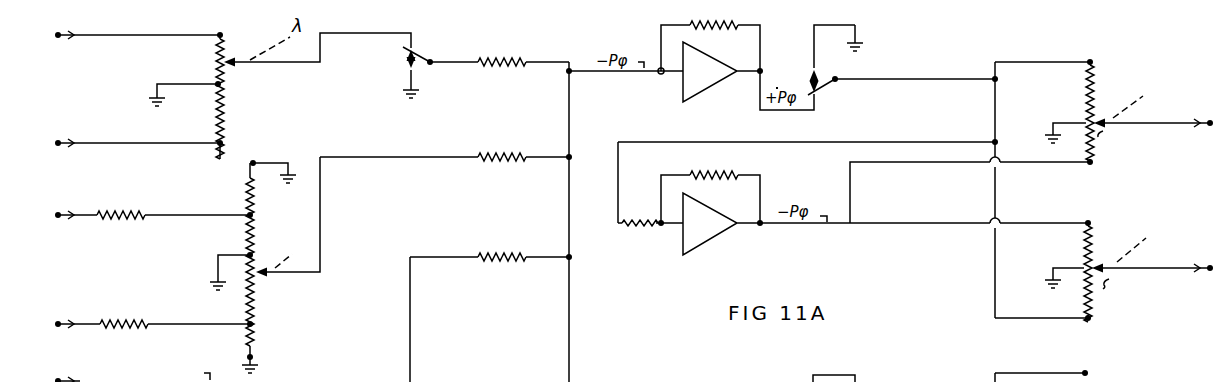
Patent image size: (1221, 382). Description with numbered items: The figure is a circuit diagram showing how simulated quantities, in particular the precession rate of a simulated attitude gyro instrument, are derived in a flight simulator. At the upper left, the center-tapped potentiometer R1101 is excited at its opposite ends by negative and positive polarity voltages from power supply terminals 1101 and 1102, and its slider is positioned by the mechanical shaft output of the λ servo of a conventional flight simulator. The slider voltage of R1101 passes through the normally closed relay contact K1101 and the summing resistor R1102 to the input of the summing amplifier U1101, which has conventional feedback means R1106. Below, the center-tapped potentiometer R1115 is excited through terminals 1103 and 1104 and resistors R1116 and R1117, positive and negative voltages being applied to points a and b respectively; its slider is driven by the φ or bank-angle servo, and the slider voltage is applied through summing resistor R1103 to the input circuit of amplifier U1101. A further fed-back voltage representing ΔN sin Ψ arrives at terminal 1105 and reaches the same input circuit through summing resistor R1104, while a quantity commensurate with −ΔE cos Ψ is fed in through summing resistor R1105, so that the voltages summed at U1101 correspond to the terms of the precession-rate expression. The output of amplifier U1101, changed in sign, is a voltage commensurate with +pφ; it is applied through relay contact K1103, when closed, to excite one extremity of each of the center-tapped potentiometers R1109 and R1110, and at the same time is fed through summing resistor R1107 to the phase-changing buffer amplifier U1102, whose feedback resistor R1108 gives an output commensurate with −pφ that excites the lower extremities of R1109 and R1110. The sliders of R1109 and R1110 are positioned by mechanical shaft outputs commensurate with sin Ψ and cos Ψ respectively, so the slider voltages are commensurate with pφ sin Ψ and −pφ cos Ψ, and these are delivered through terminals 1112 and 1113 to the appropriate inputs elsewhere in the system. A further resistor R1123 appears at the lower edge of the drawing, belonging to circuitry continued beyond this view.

The power supply terminal 1101 is at (70, 44).
The power supply terminal 1102 is at (60, 134).
The terminal 1103 is at (79, 213).
The terminal 1104 is at (41, 312).
The terminal 1105 is at (58, 365).
The terminal 1112 is at (1198, 104).
The terminal 1113 is at (1200, 248).
The center-tapped potentiometer R1101 is at (237, 72).
The summing resistor R1102 is at (486, 42).
The summing resistor R1103 is at (486, 136).
The summing resistor R1104 is at (486, 236).
The summing resistor R1105 is at (484, 375).
The feedback means R1106 is at (686, 17).
The summing resistor R1107 is at (656, 232).
The feedback resistor R1108 is at (686, 167).
The center-tapped potentiometer R1109 is at (972, 141).
The center-tapped potentiometer R1110 is at (1043, 271).
The center-tapped potentiometer R1115 is at (245, 245).
The resistor R1116 is at (101, 195).
The resistor R1117 is at (103, 304).
The resistor R1123 is at (688, 381).
The summing amplifier U1101 is at (738, 105).
The phase-changing buffer amplifier U1102 is at (711, 244).
The relay contact K1101 is at (402, 63).
The relay contact K1103 is at (821, 87).